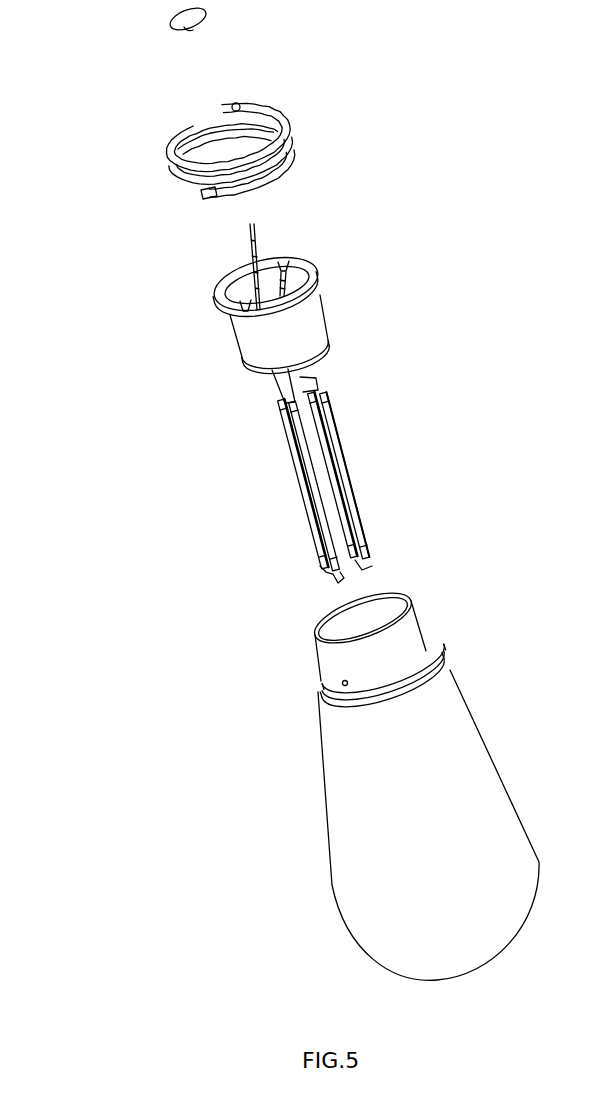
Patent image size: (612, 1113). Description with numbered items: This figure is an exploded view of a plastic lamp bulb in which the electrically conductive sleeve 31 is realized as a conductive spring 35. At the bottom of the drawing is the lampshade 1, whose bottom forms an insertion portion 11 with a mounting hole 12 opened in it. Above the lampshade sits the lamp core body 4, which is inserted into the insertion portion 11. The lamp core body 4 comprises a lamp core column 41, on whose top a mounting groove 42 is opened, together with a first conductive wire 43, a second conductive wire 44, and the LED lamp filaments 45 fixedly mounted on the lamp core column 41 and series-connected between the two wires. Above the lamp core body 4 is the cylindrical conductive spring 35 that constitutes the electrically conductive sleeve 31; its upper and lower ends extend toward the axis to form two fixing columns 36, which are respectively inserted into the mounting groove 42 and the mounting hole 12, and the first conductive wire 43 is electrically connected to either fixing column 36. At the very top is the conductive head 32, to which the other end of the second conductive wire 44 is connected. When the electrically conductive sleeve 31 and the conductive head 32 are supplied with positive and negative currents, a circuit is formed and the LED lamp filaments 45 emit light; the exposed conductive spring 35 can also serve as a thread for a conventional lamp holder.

The lamp shade 1 is at (383, 782).
The insertion portion 11 is at (333, 658).
The mounting hole 12 is at (341, 683).
The electrically conductive sleeve 31 is at (136, 172).
The conductive head 32 is at (182, 22).
The conductive spring 35 is at (185, 133).
The fixing column 36 is at (233, 105).
The lamp core body 4 is at (171, 345).
The lamp core column 41 is at (307, 312).
The mounting groove 42 is at (285, 262).
The first conductive wire 43 is at (298, 264).
The second conductive wire 44 is at (250, 243).
The LED lamp filament 45 is at (320, 425).